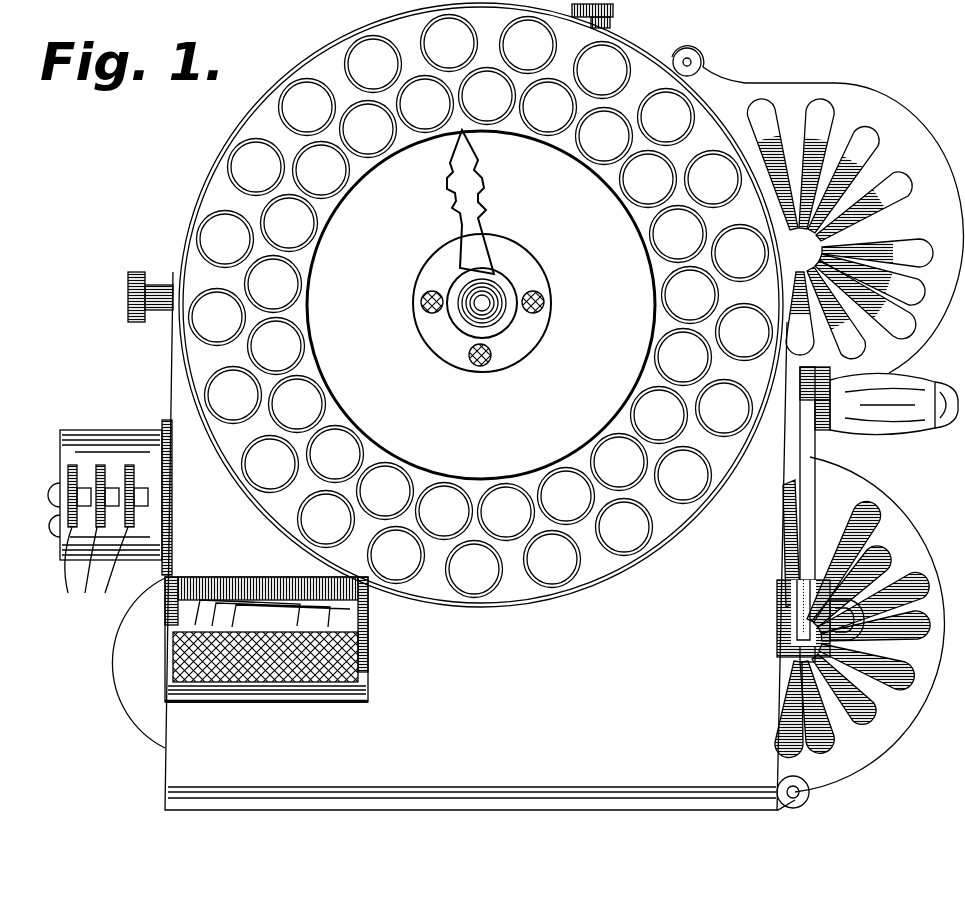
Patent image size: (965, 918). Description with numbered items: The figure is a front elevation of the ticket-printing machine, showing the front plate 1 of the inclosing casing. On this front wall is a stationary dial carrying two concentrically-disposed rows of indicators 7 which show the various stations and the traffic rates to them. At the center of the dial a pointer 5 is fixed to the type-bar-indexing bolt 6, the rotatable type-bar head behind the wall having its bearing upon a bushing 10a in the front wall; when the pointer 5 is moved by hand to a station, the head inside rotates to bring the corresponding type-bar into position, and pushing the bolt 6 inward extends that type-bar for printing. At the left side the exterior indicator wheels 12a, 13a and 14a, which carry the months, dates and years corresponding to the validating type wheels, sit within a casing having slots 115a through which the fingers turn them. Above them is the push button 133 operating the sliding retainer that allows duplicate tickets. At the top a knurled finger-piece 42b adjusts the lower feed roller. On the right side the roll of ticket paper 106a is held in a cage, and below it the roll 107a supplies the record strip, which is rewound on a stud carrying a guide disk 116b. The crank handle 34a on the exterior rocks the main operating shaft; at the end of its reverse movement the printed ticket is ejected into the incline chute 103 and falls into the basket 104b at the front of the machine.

The front plate 1 is at (590, 642).
The pointer 5 is at (468, 225).
The type-bar-indexing bolt 6 is at (481, 308).
The indicators 7 is at (318, 225).
The bushing 10a is at (536, 280).
The indicator wheel 12a is at (70, 478).
The indicator wheel 13a is at (98, 465).
The indicator wheel 14a is at (131, 468).
The crank handle 34a is at (812, 455).
The knurled finger-piece 42b is at (613, 12).
The incline chute 103 is at (245, 577).
The basket 104b is at (368, 688).
The roll of paper 106a is at (815, 130).
The roll 107a is at (812, 745).
The slots 115a is at (66, 585).
The disk 116b is at (106, 593).
The push button 133 is at (128, 302).